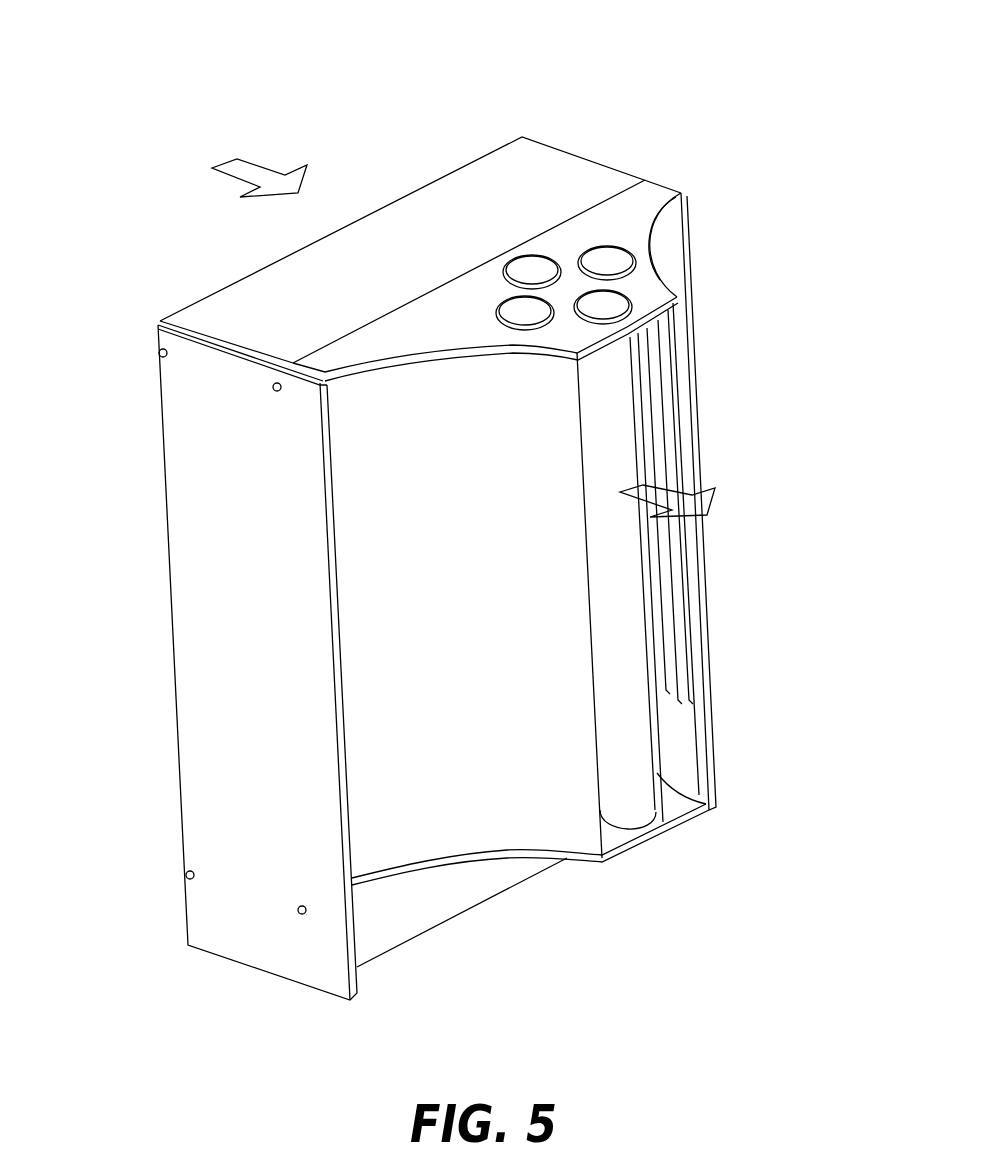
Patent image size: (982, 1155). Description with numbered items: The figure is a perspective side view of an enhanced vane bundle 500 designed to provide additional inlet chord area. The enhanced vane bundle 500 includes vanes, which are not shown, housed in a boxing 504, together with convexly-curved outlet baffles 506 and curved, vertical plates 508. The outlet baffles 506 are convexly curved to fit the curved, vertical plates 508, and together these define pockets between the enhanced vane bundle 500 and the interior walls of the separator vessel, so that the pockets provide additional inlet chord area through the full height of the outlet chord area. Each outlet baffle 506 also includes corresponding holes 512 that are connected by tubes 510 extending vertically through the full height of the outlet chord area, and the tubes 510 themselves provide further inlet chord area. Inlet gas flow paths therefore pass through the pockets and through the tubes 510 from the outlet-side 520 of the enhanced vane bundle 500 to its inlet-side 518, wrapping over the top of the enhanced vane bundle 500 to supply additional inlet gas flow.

The enhanced vane bundle 500 is at (778, 173).
The boxing 504 is at (237, 573).
The convexly-curved outlet baffle 506 is at (643, 237).
The curved, vertical plate 508 is at (672, 263).
The tube 510 is at (607, 532).
The hole 512 is at (533, 272).
The inlet-side 518 is at (118, 272).
The outlet-side 520 is at (745, 587).